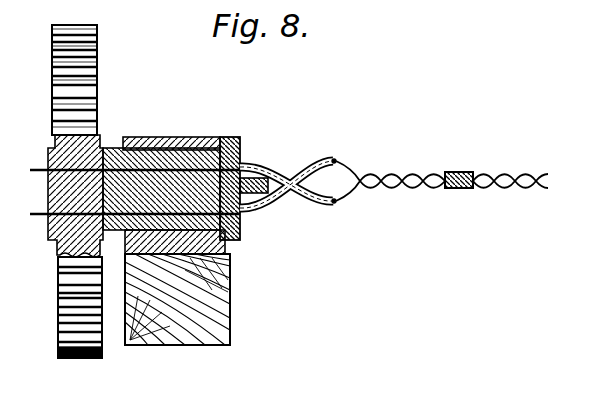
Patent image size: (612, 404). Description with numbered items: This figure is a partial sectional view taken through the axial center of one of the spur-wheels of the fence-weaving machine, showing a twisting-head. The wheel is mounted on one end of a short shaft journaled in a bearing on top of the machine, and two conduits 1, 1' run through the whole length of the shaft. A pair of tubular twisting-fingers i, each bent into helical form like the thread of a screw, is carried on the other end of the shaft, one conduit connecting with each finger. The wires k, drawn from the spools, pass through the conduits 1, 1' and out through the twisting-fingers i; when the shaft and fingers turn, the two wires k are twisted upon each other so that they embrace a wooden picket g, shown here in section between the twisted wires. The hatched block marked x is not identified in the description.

The conduit 1 is at (131, 160).
The conduit 1' is at (37, 225).
The wire k is at (541, 160).
The picket g is at (266, 166).
The twisting-fingers i is at (292, 195).
The wooden block x is at (177, 314).